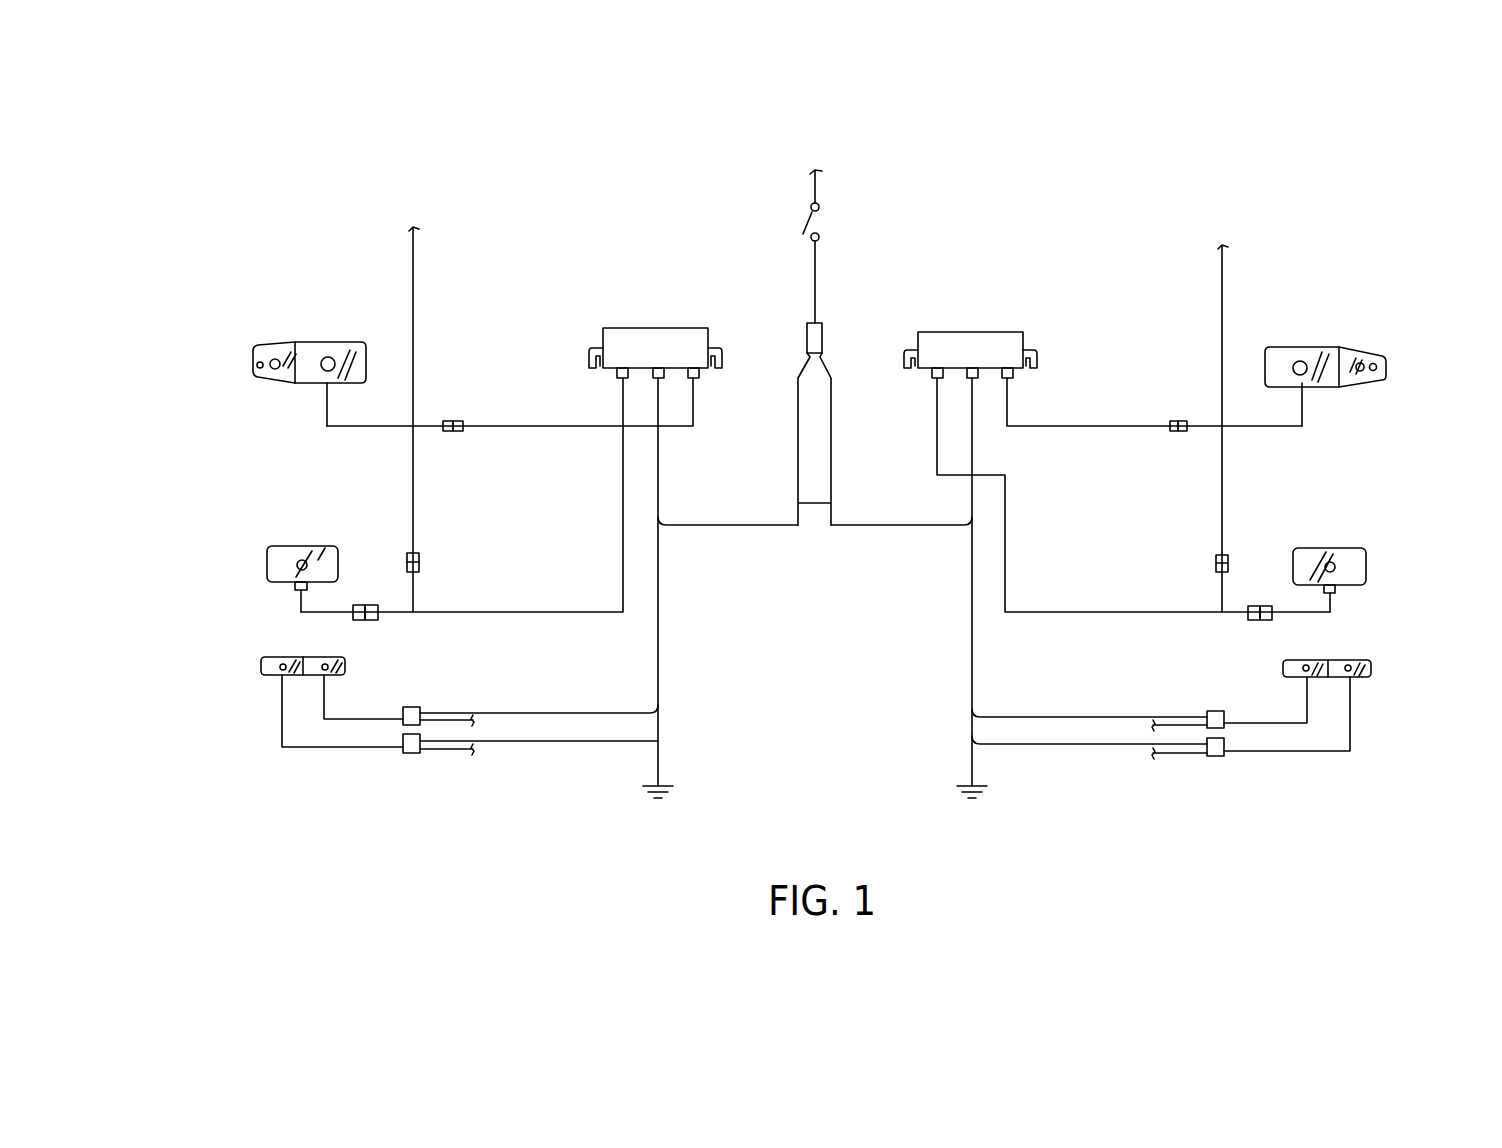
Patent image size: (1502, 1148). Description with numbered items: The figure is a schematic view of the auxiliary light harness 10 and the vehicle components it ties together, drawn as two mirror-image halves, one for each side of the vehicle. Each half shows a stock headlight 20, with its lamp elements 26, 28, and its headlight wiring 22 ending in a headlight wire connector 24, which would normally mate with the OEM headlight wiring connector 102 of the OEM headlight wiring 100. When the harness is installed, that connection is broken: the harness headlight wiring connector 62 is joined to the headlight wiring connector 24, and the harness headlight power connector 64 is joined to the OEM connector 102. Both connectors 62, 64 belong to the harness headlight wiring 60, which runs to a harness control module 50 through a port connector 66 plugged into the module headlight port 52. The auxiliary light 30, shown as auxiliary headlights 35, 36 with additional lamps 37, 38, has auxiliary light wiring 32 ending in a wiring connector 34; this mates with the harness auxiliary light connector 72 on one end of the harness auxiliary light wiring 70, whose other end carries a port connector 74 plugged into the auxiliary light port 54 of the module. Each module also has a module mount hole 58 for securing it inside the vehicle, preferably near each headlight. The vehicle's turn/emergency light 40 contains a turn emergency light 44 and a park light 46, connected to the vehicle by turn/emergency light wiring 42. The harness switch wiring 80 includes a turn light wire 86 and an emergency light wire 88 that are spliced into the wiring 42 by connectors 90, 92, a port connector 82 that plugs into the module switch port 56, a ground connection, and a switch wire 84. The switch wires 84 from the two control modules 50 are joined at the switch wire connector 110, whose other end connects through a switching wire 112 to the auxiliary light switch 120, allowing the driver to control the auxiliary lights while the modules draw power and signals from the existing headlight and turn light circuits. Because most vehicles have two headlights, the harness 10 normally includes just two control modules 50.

The auxiliary light harness 10 is at (1292, 224).
The headlight 20 is at (818, 547).
The headlight wiring 22 is at (299, 598).
The headlight wire connector 24 is at (814, 546).
The lamp bulb 26 is at (818, 553).
The lamp socket 28 is at (297, 564).
The auxiliary light 30 is at (809, 298).
The auxiliary light wiring 32 is at (324, 406).
The wiring connector 34 is at (813, 374).
The auxiliary headlight 35 is at (828, 315).
The auxiliary headlight 36 is at (331, 357).
The stop lamp bulb 37 is at (258, 360).
The turn signal bulb 38 is at (274, 359).
The turn/emergency light 40 is at (818, 661).
The turn/emergency light wiring 42 is at (347, 722).
The turn emergency light 44 is at (280, 667).
The park light 46 is at (330, 668).
The harness control module 50 is at (819, 302).
The module headlight port 52 is at (620, 368).
The auxiliary light port 54 is at (694, 368).
The module switch port 56 is at (659, 368).
The module mount hole 58 is at (594, 347).
The harness headlight wiring 60 is at (567, 615).
The harness headlight wiring connector 62 is at (372, 605).
The harness headlight power connector 64 is at (420, 566).
The port connector 66 is at (616, 379).
The harness auxiliary light wiring 70 is at (512, 424).
The harness auxiliary light connector 72 is at (456, 421).
The port connector 74 is at (699, 379).
The harness switch wiring 80 is at (762, 582).
The port connector 82 is at (815, 582).
The switch wire 84 is at (797, 503).
The turn light wire 86 is at (592, 743).
The emergency light wire 88 is at (533, 715).
The connector 90 is at (412, 754).
The connector 92 is at (415, 708).
The OEM headlight wiring 100 is at (418, 253).
The OEM headlight wiring connector 102 is at (817, 539).
The switch wire connector 110 is at (823, 333).
The switching wire 112 is at (816, 273).
The auxiliary light switch 120 is at (808, 220).